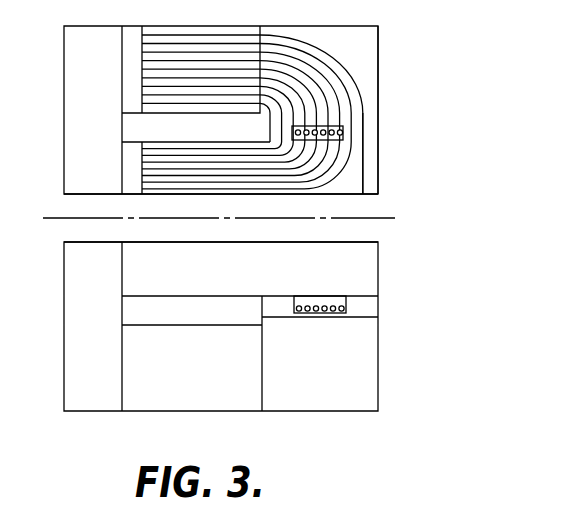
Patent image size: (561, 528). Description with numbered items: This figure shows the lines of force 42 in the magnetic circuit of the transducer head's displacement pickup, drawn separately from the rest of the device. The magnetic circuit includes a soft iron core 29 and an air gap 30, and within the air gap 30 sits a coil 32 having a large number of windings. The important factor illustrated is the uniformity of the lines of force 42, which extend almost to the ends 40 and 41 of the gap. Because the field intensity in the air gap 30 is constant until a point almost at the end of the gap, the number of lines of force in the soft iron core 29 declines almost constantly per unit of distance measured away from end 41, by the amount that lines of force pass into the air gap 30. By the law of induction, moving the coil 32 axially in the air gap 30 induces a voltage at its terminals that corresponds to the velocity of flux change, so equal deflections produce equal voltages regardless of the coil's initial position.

The soft iron core 29 is at (362, 180).
The air gap 30 is at (370, 134).
The coil 32 is at (330, 142).
The end of the gap 40 is at (258, 133).
The end of the gap 41 is at (379, 127).
The lines of force 42 is at (332, 87).